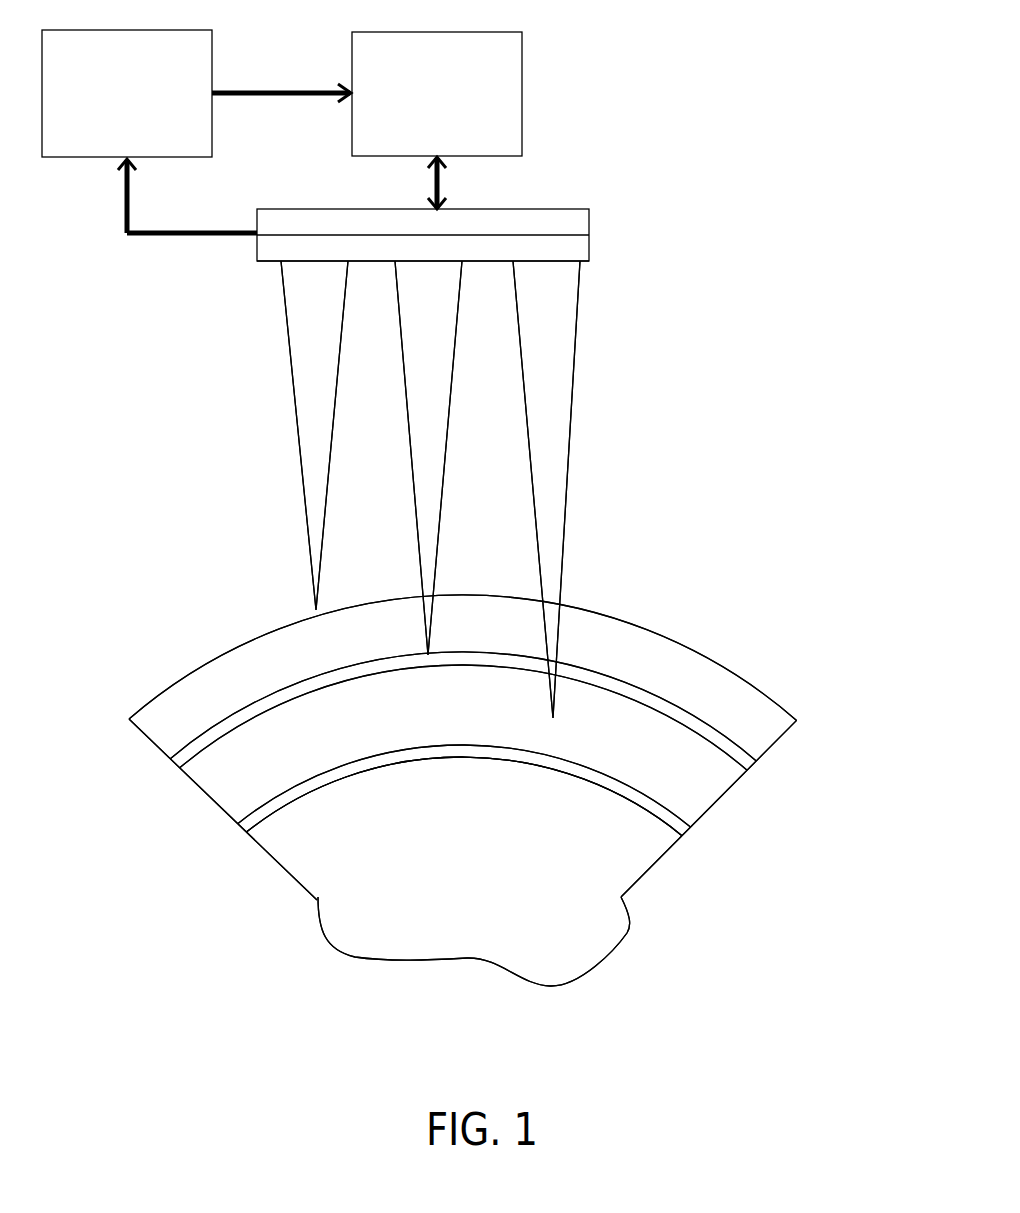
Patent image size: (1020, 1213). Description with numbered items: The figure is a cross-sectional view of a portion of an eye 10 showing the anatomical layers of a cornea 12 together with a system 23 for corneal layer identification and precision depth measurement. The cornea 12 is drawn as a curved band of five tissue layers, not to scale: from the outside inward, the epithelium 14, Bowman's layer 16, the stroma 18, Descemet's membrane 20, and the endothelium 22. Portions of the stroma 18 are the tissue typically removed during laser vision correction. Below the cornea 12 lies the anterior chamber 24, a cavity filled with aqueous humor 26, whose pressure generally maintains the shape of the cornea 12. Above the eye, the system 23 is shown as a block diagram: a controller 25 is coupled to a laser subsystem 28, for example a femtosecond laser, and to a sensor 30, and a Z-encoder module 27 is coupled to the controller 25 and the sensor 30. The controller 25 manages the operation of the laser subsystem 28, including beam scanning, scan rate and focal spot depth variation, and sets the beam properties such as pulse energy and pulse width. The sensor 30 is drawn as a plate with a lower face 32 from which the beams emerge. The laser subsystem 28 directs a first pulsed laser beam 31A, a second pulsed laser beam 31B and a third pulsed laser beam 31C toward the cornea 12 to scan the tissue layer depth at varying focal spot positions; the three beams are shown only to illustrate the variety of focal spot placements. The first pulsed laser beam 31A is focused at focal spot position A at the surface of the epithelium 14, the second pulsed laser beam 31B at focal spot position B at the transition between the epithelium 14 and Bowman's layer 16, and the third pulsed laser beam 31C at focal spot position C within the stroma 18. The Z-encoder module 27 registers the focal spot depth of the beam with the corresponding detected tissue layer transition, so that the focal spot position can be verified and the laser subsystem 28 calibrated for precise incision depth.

The eye 10 is at (643, 567).
The cornea 12 is at (772, 800).
The epithelium 14 is at (757, 688).
The Bowman's layer 16 is at (195, 748).
The stroma 18 is at (380, 731).
The Descemet's membrane 20 is at (260, 818).
The endothelium 22 is at (647, 808).
The system 23 is at (642, 107).
The anterior chamber 24 is at (335, 977).
The controller 25 is at (437, 94).
The aqueous humor 26 is at (540, 843).
The Z-encoder module 27 is at (127, 93).
The laser subsystem 28 is at (230, 287).
The sensor 30 is at (563, 209).
The first pulsed laser beam 31A is at (298, 462).
The second pulsed laser beam 31B is at (410, 440).
The third pulsed laser beam 31C is at (574, 403).
The transducer face 32 is at (589, 261).
The focal spot position A is at (312, 611).
The focal spot position B is at (428, 655).
The focal spot position C is at (553, 718).